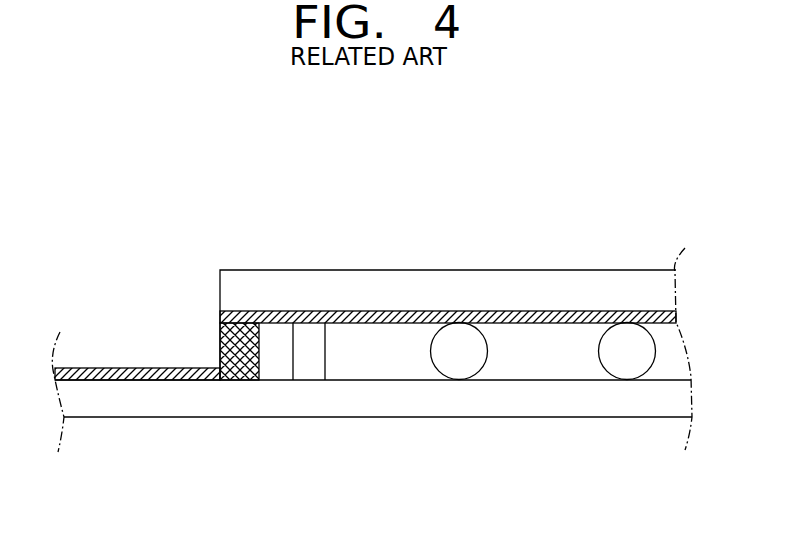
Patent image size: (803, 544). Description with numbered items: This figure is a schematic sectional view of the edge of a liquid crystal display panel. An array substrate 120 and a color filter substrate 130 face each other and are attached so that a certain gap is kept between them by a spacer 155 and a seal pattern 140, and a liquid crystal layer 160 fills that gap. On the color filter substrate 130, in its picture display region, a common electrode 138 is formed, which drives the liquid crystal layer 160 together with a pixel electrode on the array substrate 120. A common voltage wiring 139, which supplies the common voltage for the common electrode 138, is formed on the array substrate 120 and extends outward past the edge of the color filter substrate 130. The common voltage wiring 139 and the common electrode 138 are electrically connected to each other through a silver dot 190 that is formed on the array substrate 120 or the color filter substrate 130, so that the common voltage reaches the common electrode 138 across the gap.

The array substrate 120 is at (560, 402).
The color filter substrate 130 is at (264, 292).
The common electrode 138 is at (234, 317).
The common voltage wiring 139 is at (100, 372).
The seal pattern 140 is at (310, 362).
The spacer 155 is at (625, 362).
The liquid crystal layer 160 is at (528, 353).
The silver dot 190 is at (230, 347).